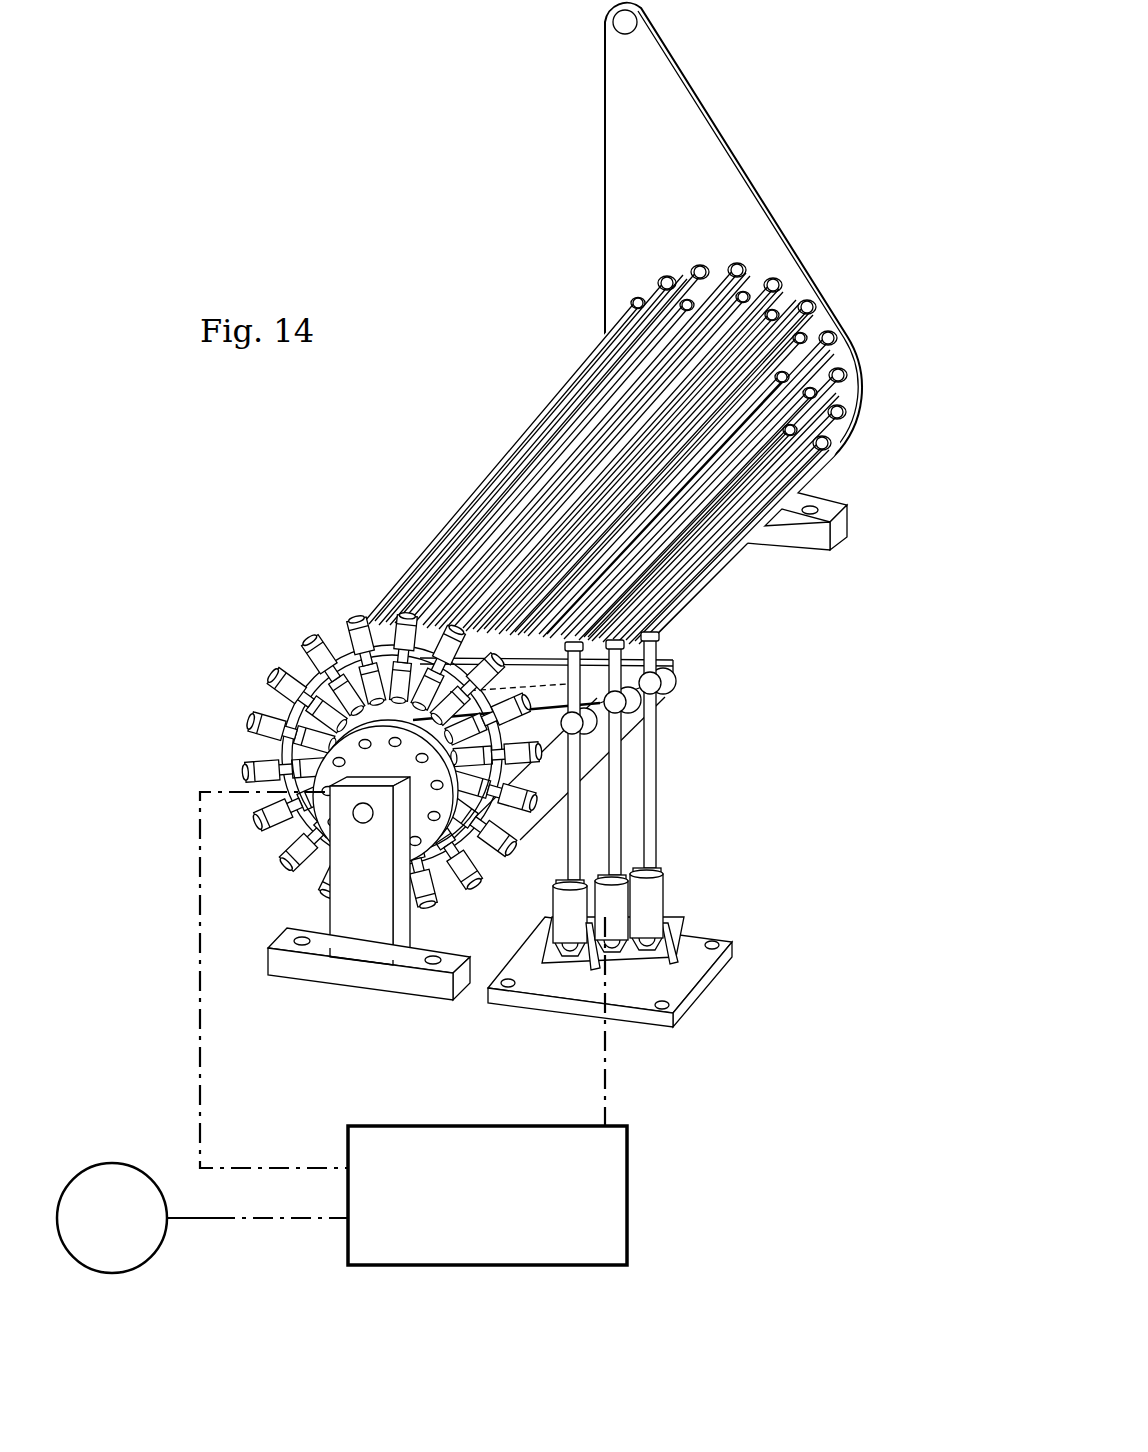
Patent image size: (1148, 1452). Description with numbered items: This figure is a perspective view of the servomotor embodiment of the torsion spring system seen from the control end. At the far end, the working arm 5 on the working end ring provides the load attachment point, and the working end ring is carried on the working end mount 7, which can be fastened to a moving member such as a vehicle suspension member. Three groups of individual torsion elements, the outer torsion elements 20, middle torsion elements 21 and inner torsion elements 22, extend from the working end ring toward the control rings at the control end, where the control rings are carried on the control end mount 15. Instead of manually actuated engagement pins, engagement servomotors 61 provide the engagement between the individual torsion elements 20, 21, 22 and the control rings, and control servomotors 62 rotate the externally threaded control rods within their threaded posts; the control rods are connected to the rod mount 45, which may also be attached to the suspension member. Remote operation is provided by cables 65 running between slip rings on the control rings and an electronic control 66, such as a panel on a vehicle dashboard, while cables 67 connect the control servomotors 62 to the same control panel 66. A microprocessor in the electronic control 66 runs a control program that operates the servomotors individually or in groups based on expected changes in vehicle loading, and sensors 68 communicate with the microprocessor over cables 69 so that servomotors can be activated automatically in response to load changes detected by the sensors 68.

The working arm 5 is at (720, 170).
The working end mount 7 is at (787, 535).
The control end mount 15 is at (368, 977).
The outer torsion elements 20 is at (662, 283).
The middle torsion elements 21 is at (740, 295).
The inner torsion elements 22 is at (780, 366).
The rod mount 45 is at (693, 975).
The engagement servomotors 61 is at (320, 637).
The control servomotors 62 is at (650, 900).
The cables 65 is at (201, 1058).
The electronic control 66 is at (616, 1197).
The cables 67 is at (606, 1102).
The sensors 68 is at (127, 1271).
The cables 69 is at (266, 1222).